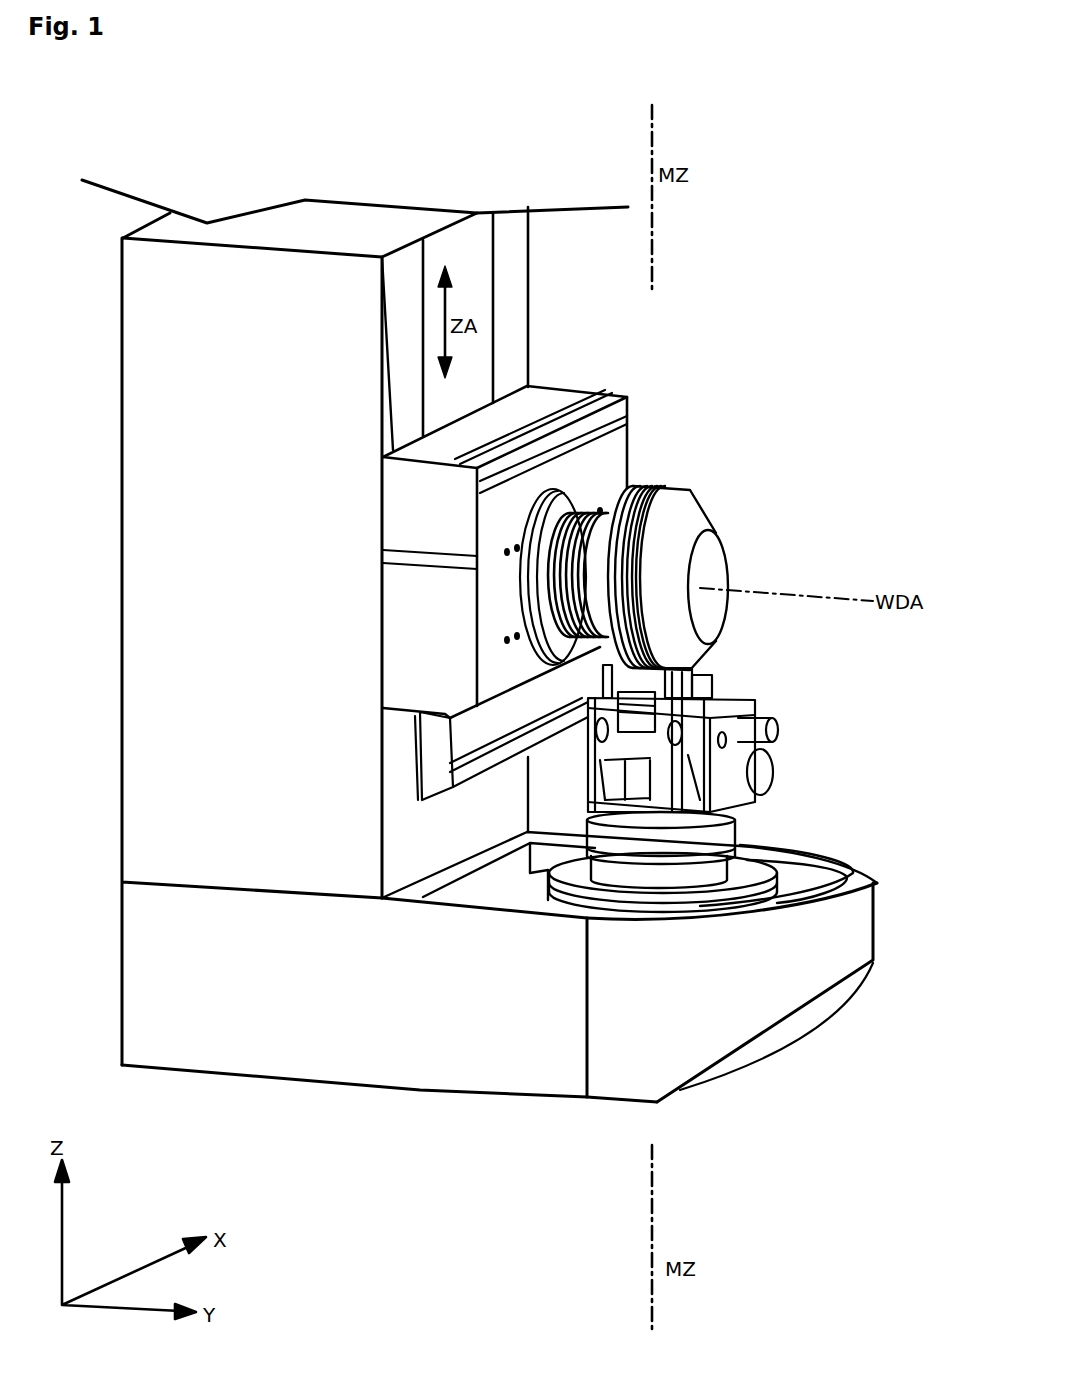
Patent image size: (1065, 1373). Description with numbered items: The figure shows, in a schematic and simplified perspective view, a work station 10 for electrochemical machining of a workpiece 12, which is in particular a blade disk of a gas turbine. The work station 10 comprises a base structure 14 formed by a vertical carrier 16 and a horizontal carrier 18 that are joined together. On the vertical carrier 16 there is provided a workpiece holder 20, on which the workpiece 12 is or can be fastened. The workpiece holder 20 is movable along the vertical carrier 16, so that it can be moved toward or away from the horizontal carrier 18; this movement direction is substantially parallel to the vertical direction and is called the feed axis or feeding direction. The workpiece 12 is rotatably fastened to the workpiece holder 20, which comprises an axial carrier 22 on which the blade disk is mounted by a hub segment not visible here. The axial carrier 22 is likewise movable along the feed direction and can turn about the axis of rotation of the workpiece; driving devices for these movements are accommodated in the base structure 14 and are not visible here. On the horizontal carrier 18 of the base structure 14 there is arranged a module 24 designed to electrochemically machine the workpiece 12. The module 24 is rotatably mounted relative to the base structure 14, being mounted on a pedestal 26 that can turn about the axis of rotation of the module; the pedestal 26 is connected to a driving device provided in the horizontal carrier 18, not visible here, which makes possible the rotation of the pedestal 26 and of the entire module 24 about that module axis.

The work station 10 is at (767, 325).
The workpiece 12 is at (703, 474).
The base structure 14 is at (153, 723).
The vertical carrier 16 is at (188, 443).
The horizontal carrier 18 is at (467, 1053).
The workpiece holder 20 is at (533, 575).
The axial carrier 22 is at (612, 535).
The module 24 is at (797, 735).
The pedestal 26 is at (720, 840).